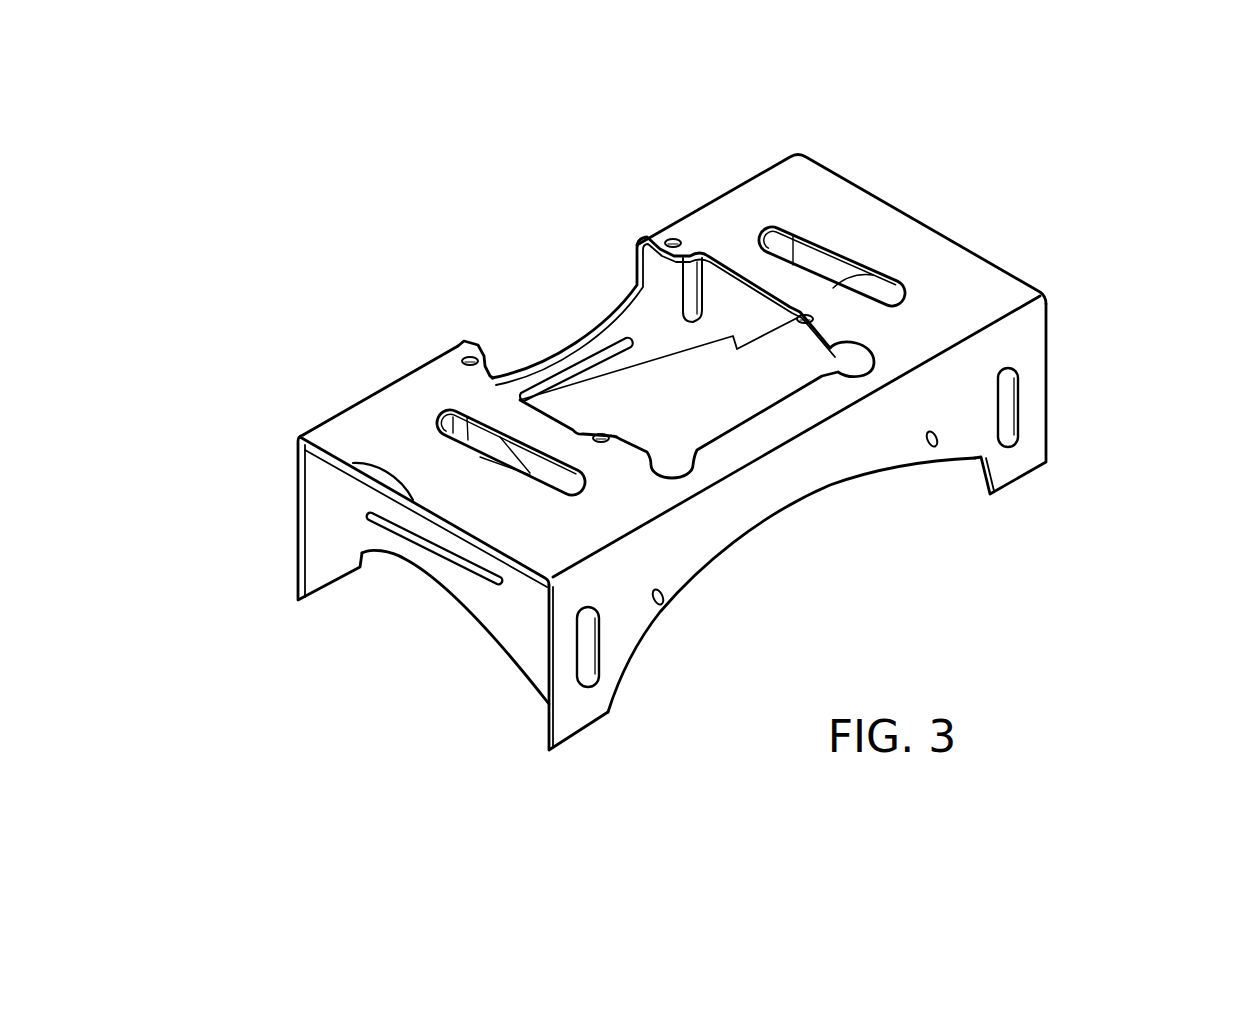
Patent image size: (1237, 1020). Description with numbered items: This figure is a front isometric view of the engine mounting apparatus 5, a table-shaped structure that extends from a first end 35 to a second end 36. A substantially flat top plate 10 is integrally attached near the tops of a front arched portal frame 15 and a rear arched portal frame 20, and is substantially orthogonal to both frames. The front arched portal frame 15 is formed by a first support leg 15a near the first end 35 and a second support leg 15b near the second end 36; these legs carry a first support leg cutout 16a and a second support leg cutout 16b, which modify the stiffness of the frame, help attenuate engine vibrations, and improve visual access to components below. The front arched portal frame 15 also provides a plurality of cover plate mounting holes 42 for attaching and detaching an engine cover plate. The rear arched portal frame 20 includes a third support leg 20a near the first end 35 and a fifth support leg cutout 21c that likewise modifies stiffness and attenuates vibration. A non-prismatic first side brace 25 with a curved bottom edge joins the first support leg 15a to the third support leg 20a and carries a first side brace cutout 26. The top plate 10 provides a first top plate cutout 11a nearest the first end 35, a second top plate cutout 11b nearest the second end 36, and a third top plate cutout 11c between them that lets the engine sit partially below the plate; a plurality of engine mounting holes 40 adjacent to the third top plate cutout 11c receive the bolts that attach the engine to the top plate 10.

The engine mounting apparatus 5 is at (288, 128).
The top plate 10 is at (802, 167).
The first top plate cutout 11a is at (463, 410).
The second top plate cutout 11b is at (876, 297).
The third top plate cutout 11c is at (717, 423).
The front arched portal frame 15 is at (740, 522).
The first support leg 15a is at (563, 713).
The second support leg 15b is at (1030, 443).
The first support leg cutout 16a is at (590, 653).
The second support leg cutout 16b is at (1005, 398).
The rear arched portal frame 20 is at (637, 322).
The third support leg 20a is at (318, 573).
The fifth support leg cutout 21c is at (554, 382).
The first side brace 25 is at (493, 600).
The first side brace cutout 26 is at (433, 548).
The first end 35 is at (353, 463).
The second end 36 is at (971, 249).
The engine mounting holes 40 is at (672, 239).
The cover plate mounting holes 42 is at (665, 595).